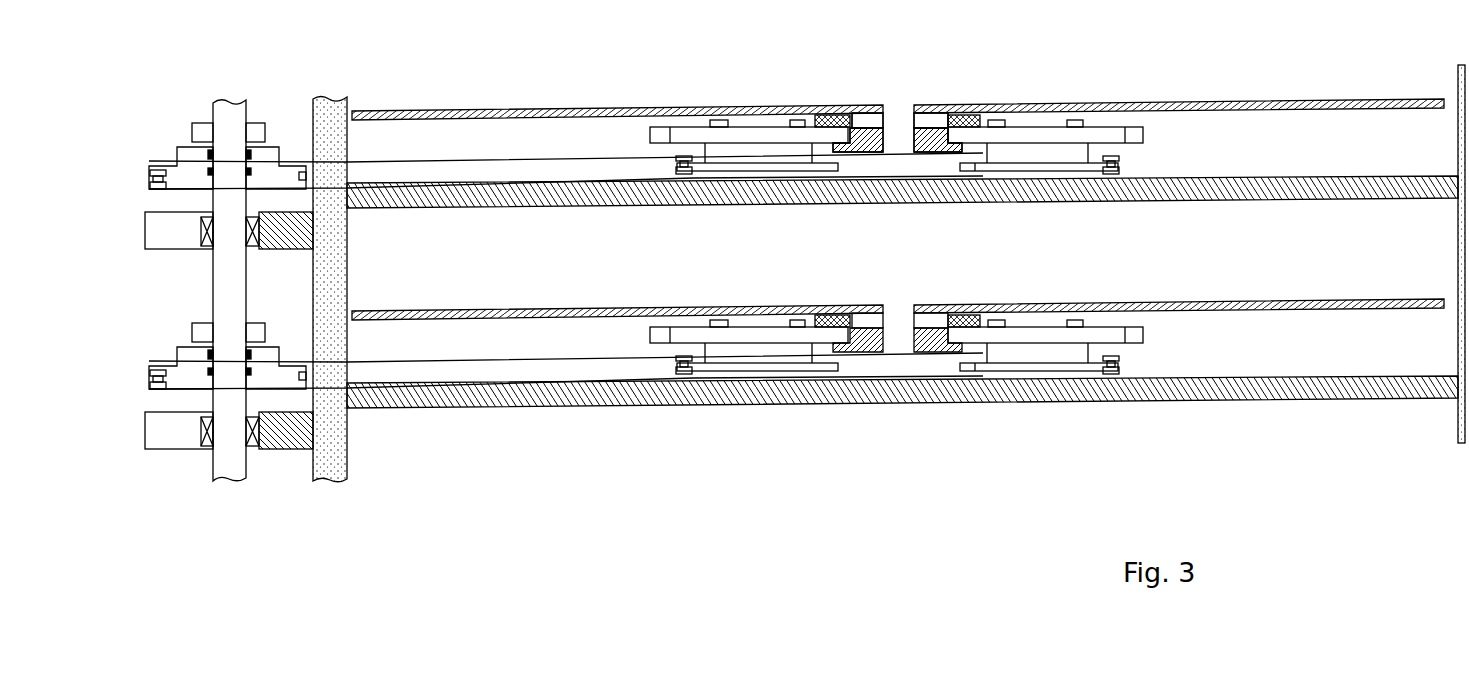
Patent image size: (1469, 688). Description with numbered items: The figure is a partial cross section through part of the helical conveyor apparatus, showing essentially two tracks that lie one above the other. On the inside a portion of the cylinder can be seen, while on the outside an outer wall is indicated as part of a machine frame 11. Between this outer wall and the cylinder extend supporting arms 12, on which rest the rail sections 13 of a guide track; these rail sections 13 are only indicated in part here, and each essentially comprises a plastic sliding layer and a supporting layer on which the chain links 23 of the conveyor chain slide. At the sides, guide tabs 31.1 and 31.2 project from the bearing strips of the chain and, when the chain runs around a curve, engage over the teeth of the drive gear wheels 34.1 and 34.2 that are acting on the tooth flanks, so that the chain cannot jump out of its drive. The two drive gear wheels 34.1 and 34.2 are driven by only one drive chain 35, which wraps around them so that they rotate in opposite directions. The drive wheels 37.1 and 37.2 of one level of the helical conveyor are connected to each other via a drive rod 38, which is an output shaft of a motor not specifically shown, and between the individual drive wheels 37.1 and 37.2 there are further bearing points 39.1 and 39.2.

The machine frame 11 is at (340, 455).
The supporting arms 12 is at (512, 198).
The rail sections 13 is at (828, 120).
The chain links 23 is at (1217, 98).
The guide tab 31.1 is at (848, 132).
The guide tab 31.2 is at (962, 138).
The drive gear wheel 34.1 is at (712, 130).
The drive gear wheel 34.2 is at (1060, 125).
The drive chain 35 is at (675, 172).
The drive wheel 37.1 is at (273, 358).
The drive wheel 37.2 is at (268, 155).
The drive rod 38 is at (226, 283).
The bearing point 39.1 is at (298, 237).
The bearing point 39.2 is at (292, 442).